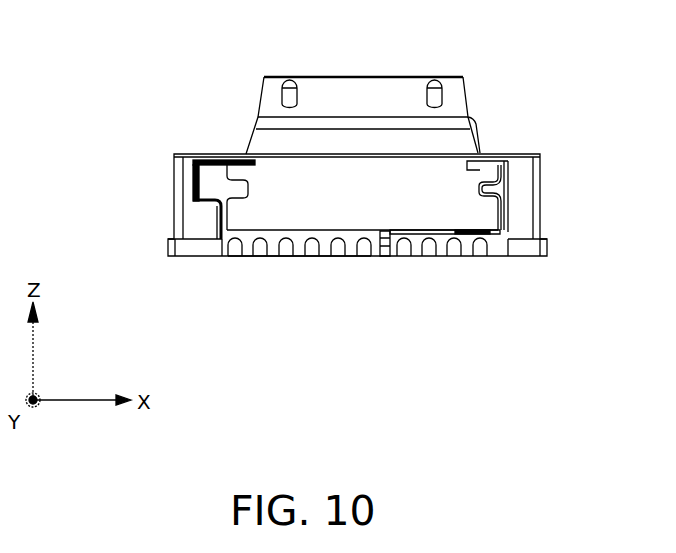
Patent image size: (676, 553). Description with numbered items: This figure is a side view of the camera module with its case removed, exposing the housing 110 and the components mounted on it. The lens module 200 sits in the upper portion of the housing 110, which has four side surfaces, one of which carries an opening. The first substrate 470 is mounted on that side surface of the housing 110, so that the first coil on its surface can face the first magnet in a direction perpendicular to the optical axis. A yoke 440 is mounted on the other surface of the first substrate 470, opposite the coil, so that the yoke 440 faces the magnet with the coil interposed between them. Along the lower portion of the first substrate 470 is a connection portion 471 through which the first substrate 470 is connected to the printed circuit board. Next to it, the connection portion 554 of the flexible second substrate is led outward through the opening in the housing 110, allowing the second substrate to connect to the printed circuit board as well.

The housing 110 is at (518, 199).
The lens module 200 is at (393, 90).
The yoke 440 is at (270, 175).
The first substrate 470 is at (205, 181).
The connection portion 471 is at (273, 250).
The connection portion 554 is at (445, 250).